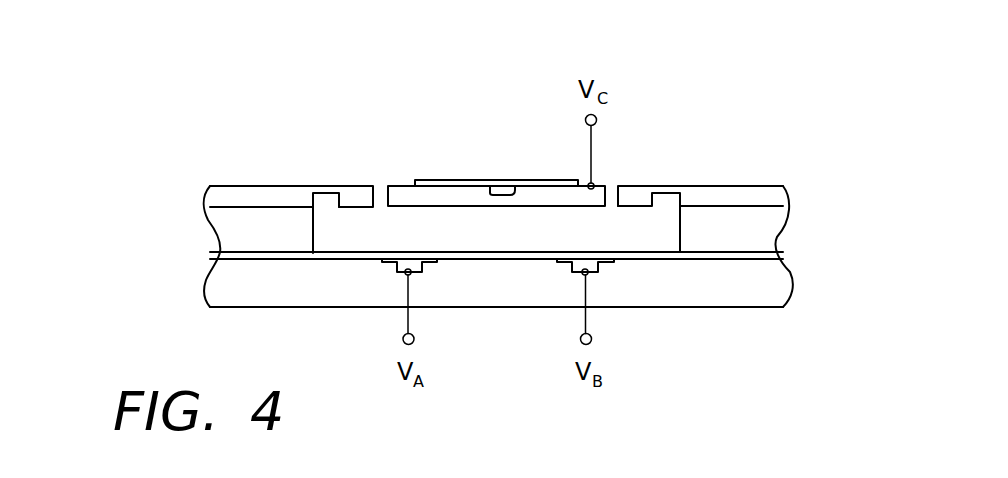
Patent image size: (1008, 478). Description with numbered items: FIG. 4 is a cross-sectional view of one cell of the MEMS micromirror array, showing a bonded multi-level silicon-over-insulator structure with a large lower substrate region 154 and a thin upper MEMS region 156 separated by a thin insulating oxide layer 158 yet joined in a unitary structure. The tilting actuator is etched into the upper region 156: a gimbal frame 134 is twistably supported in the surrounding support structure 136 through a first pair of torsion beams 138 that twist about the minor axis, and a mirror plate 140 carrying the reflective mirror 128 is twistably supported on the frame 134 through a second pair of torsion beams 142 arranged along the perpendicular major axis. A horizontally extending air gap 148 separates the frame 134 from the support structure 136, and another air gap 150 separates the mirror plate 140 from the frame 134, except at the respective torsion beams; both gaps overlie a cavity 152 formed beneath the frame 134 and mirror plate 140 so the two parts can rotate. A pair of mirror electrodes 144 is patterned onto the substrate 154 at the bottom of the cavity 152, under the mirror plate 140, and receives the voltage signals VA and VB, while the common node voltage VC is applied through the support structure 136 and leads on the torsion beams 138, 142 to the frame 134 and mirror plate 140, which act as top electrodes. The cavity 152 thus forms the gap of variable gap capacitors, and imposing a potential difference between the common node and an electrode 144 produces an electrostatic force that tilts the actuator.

The support structure 136 is at (236, 182).
The air gap 148 is at (306, 194).
The frame 134 is at (362, 198).
The mirror plate 140 is at (408, 195).
The mirror 128 is at (450, 184).
The first pair of torsion beams 138 is at (504, 191).
The second pair of torsion beams 142 is at (668, 186).
The cavity 152 is at (467, 239).
The upper MEMS region 156 is at (228, 236).
The insulating oxide layer 158 is at (262, 257).
The lower substrate region 154 is at (228, 288).
The mirror electrodes 144 is at (558, 261).
The air gap 150 is at (611, 200).